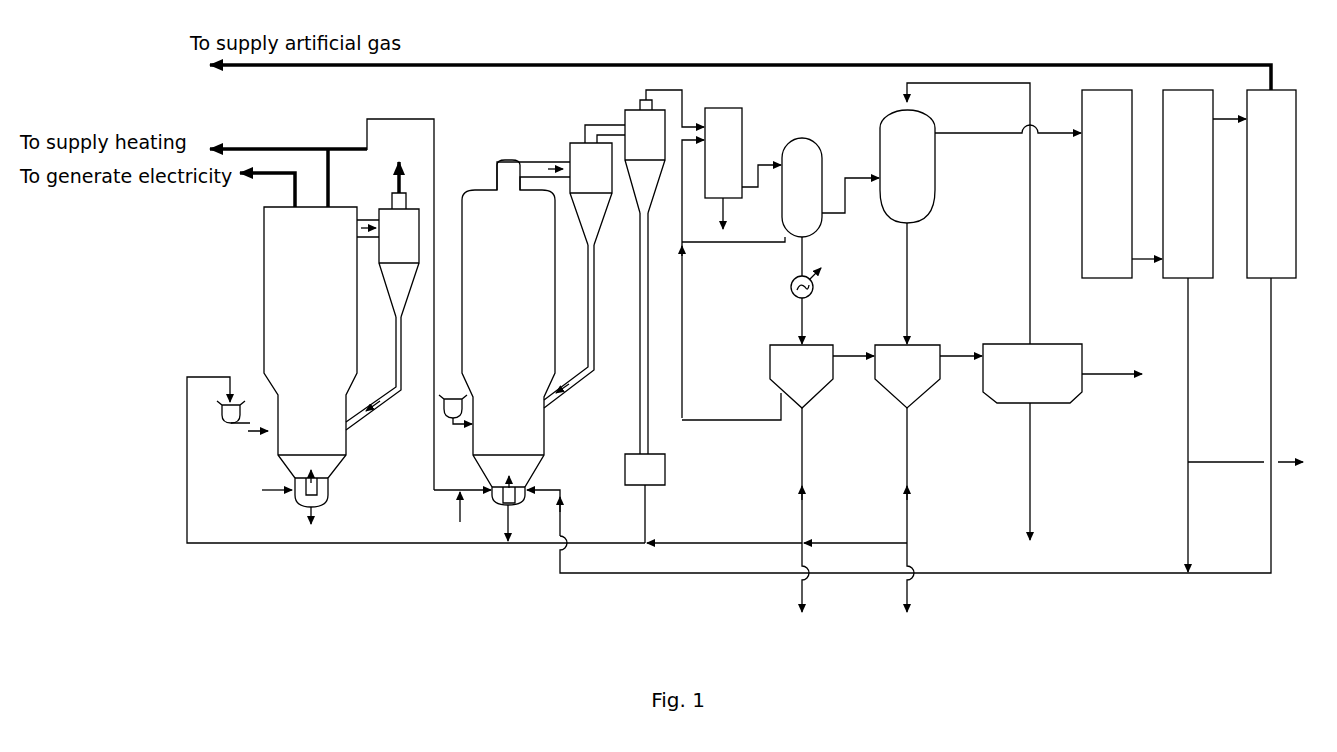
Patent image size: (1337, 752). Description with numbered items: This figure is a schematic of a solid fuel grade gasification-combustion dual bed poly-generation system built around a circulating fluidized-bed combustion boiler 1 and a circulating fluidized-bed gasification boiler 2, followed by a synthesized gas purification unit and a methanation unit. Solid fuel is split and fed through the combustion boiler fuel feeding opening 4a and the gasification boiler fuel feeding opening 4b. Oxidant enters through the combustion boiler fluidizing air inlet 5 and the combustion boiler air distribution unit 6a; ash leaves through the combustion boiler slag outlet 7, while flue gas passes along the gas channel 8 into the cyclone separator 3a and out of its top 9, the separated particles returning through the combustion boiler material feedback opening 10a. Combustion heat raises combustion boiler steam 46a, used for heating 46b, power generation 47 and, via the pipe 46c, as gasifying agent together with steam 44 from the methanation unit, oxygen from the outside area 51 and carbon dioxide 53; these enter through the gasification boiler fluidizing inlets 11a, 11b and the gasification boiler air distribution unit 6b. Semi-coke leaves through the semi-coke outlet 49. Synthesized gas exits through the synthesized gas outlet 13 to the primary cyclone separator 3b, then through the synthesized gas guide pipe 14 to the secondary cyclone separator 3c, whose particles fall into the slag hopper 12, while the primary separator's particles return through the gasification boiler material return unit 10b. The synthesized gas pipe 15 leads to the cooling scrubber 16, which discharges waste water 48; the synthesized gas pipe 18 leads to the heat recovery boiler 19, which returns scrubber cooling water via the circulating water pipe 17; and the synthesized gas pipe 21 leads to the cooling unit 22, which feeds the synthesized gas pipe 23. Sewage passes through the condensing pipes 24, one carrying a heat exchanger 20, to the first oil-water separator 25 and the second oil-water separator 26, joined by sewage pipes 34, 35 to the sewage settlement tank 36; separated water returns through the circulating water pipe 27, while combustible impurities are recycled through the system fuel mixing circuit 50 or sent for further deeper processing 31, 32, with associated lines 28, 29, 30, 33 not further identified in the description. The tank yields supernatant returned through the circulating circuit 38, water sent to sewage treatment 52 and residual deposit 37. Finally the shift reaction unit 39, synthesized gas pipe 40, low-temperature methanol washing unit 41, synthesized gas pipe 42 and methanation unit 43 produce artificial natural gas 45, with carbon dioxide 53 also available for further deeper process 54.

The circulating fluidized-bed combustion boiler 1 is at (310, 357).
The circulating fluidized-bed gasification boiler 2 is at (508, 332).
The cyclone separator 3a is at (399, 255).
The primary cyclone separator 3b is at (591, 194).
The secondary cyclone separator 3c is at (645, 156).
The combustion boiler fuel feeding opening 4a is at (242, 416).
The gasification boiler fuel feeding opening 4b is at (455, 403).
The combustion boiler fluidizing air inlet 5 is at (271, 490).
The combustion boiler air distribution unit 6a is at (310, 475).
The gasification boiler air distribution unit 6b is at (507, 479).
The combustion boiler slag outlet 7 is at (311, 523).
The gas channel 8 is at (368, 220).
The top of cyclone separator 9 is at (399, 167).
The combustion boiler material feedback opening 10a is at (373, 373).
The gasification boiler material return unit 10b is at (569, 326).
The gasification boiler fluidizing inlet 11a is at (462, 480).
The gasification boiler fluidizing inlet 11b is at (556, 503).
The slag hopper 12 is at (645, 378).
The synthesized gas outlet 13 is at (533, 176).
The synthesized gas guide pipe 14 is at (605, 127).
The synthesized gas pipe 15 is at (675, 101).
The cooling scrubber 16 is at (723, 153).
The circulating water pipe 17 is at (733, 279).
The synthesized gas pipe 18 is at (761, 166).
The heat recovery boiler 19 is at (802, 187).
The heat exchanger 20 is at (794, 290).
The synthesized gas pipe 21 is at (850, 188).
The cooling unit 22 is at (907, 166).
The synthesized gas pipe 23 is at (1008, 125).
The condensing pipe 24 is at (897, 283).
The first oil-water separator 25 is at (801, 376).
The second oil-water separator 26 is at (907, 376).
The circulating water pipe 27 is at (731, 406).
The first tank outlet line 28 is at (813, 475).
The second tank outlet line 29 is at (919, 475).
The recirculation line 30 is at (724, 534).
The further deeper processing 31 is at (795, 587).
The further deeper processing 32 is at (900, 587).
The connecting line 33 is at (855, 534).
The sewage pipe 34 is at (853, 348).
The sewage pipe 35 is at (961, 348).
The sewage settlement tank 36 is at (1032, 373).
The residual deposit 37 is at (1029, 484).
The supernatant circulating circuit 38 is at (968, 213).
The shift reaction unit 39 is at (1107, 184).
The synthesized gas pipe 40 is at (1147, 251).
The low-temperature methanol washing unit 41 is at (1188, 184).
The synthesized gas pipe 42 is at (1229, 128).
The methanation unit 43 is at (1271, 184).
The steam 44 is at (915, 425).
The artificial natural gas 45 is at (740, 69).
The combustion boiler steam 46a is at (340, 178).
The heating 46b is at (288, 140).
The pipe 46c is at (400, 297).
The power generation 47 is at (267, 181).
The waste water 48 is at (735, 213).
The semi-coke outlet 49 is at (494, 523).
The system fuel mixing circuit 50 is at (416, 460).
The outside area 51 is at (449, 507).
The sewage treatment 52 is at (1112, 366).
The carbon dioxide 53 is at (1178, 425).
The further deeper process 54 is at (1245, 450).